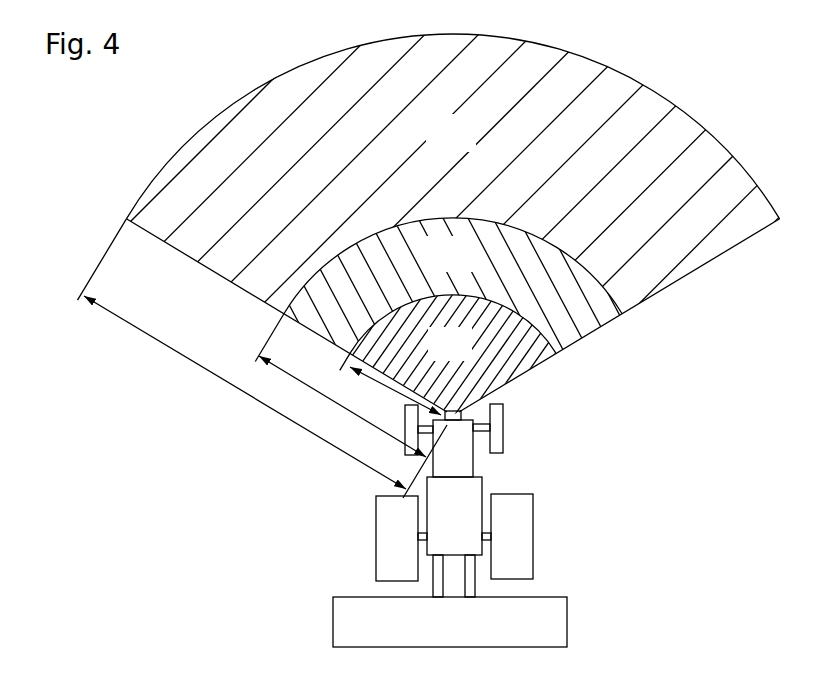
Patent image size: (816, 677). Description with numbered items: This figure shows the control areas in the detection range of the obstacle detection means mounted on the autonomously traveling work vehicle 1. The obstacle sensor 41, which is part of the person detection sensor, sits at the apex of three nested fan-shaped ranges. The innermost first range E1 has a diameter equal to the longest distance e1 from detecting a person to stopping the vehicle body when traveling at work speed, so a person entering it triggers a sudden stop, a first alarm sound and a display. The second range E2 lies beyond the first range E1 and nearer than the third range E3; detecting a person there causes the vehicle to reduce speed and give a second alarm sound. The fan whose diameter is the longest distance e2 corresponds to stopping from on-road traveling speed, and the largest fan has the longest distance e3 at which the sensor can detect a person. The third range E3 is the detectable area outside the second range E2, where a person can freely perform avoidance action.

The autonomously traveling work vehicle 1 is at (542, 525).
The obstacle sensor 41 is at (458, 422).
The first range E1 is at (468, 355).
The second range E2 is at (457, 315).
The third range E3 is at (419, 175).
The longest distance e1 is at (390, 385).
The longest distance e2 is at (340, 386).
The longest distance e3 is at (263, 358).